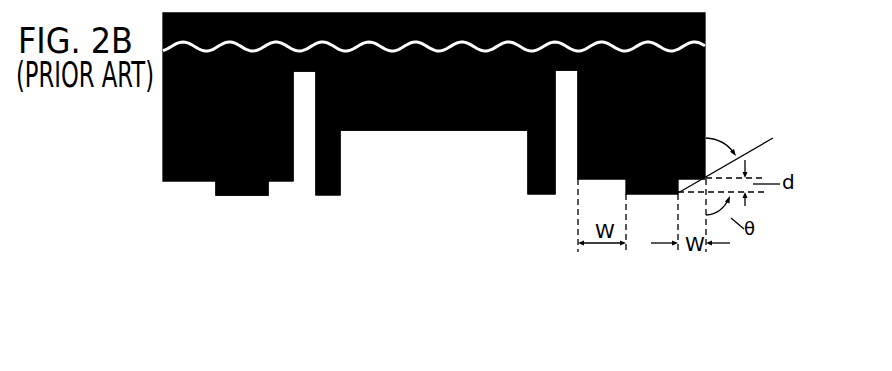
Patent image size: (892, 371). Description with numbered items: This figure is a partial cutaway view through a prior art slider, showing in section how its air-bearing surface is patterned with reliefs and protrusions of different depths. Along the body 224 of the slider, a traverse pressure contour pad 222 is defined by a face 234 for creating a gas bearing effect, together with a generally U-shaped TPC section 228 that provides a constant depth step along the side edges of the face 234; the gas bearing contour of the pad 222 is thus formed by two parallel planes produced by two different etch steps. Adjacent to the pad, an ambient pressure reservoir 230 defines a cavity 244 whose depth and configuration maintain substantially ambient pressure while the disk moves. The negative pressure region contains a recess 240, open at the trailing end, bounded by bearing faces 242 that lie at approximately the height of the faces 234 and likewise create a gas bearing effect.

The traverse pressure contour pad 222 is at (165, 237).
The substrate body 224 is at (697, 72).
The U-shaped TPC section 228 is at (271, 174).
The ambient pressure reservoir 230 is at (294, 183).
The face 234 is at (238, 187).
The recess 240 is at (437, 122).
The bearing face 242 is at (322, 187).
The cavity 244 is at (353, 147).